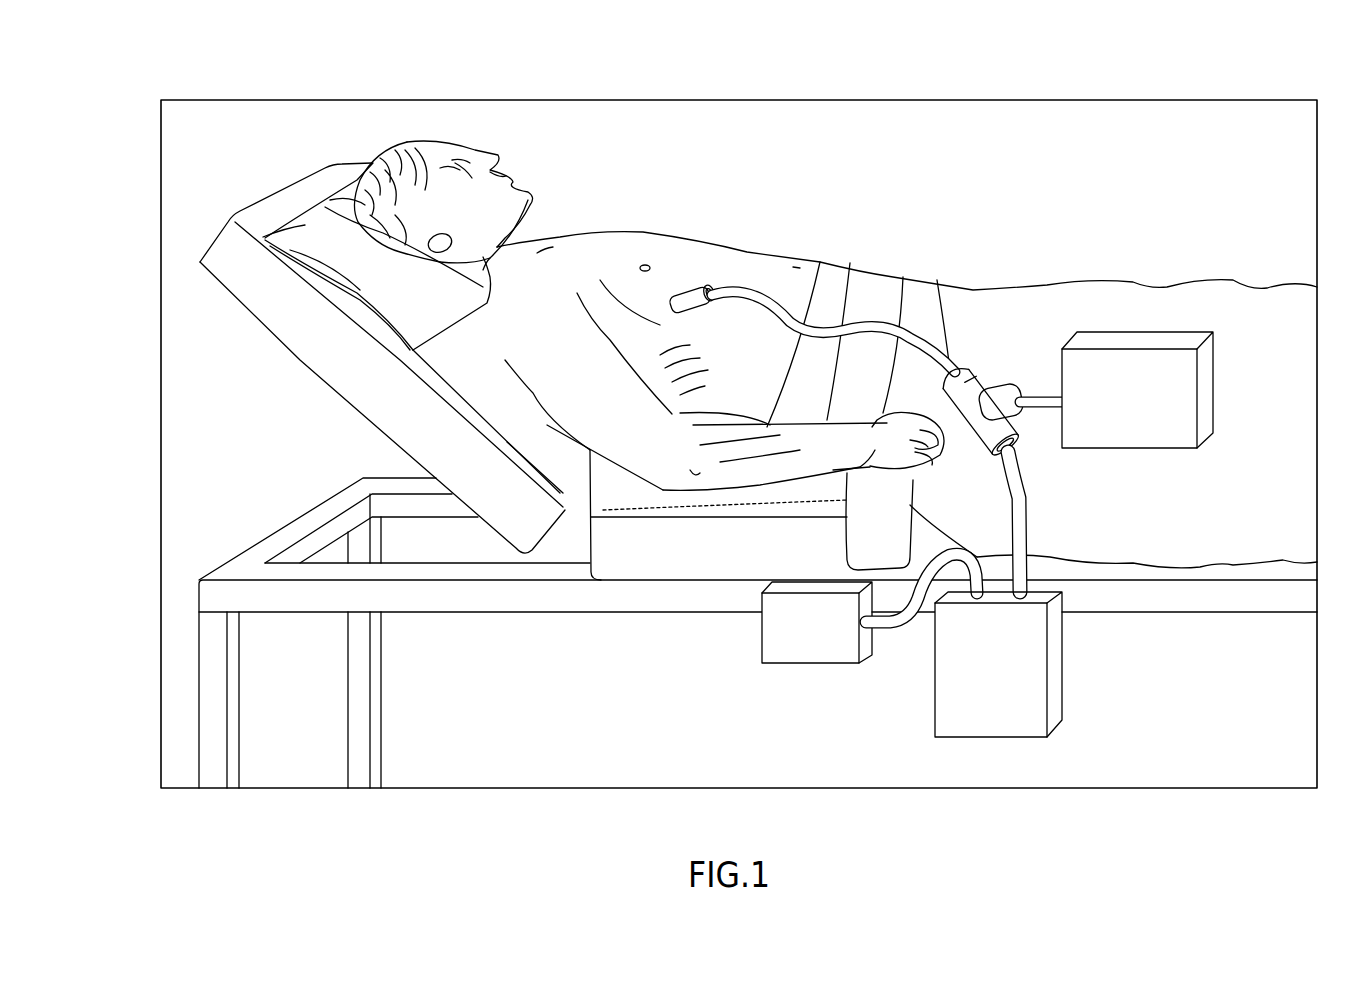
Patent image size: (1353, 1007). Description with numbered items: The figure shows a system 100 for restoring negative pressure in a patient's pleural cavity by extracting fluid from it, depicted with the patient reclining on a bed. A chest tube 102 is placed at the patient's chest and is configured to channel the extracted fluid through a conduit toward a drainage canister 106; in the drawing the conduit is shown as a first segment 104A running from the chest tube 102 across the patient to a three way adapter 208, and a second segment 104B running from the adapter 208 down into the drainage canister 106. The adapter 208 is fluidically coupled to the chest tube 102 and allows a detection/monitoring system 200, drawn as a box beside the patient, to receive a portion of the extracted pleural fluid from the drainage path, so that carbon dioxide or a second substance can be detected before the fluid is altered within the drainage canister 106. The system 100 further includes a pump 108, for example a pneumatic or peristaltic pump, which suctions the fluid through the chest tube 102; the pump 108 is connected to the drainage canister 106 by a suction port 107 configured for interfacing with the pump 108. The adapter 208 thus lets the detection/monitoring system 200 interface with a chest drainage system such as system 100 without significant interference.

The system 100 is at (185, 60).
The chest tube 102 is at (688, 290).
The first tube segment 104A is at (740, 280).
The second tube segment 104B is at (1023, 523).
The drainage canister 106 is at (1053, 672).
The suction port 107 is at (953, 550).
The pump 108 is at (805, 667).
The detection/monitoring system 200 is at (1138, 342).
The three way adapter 208 is at (965, 378).